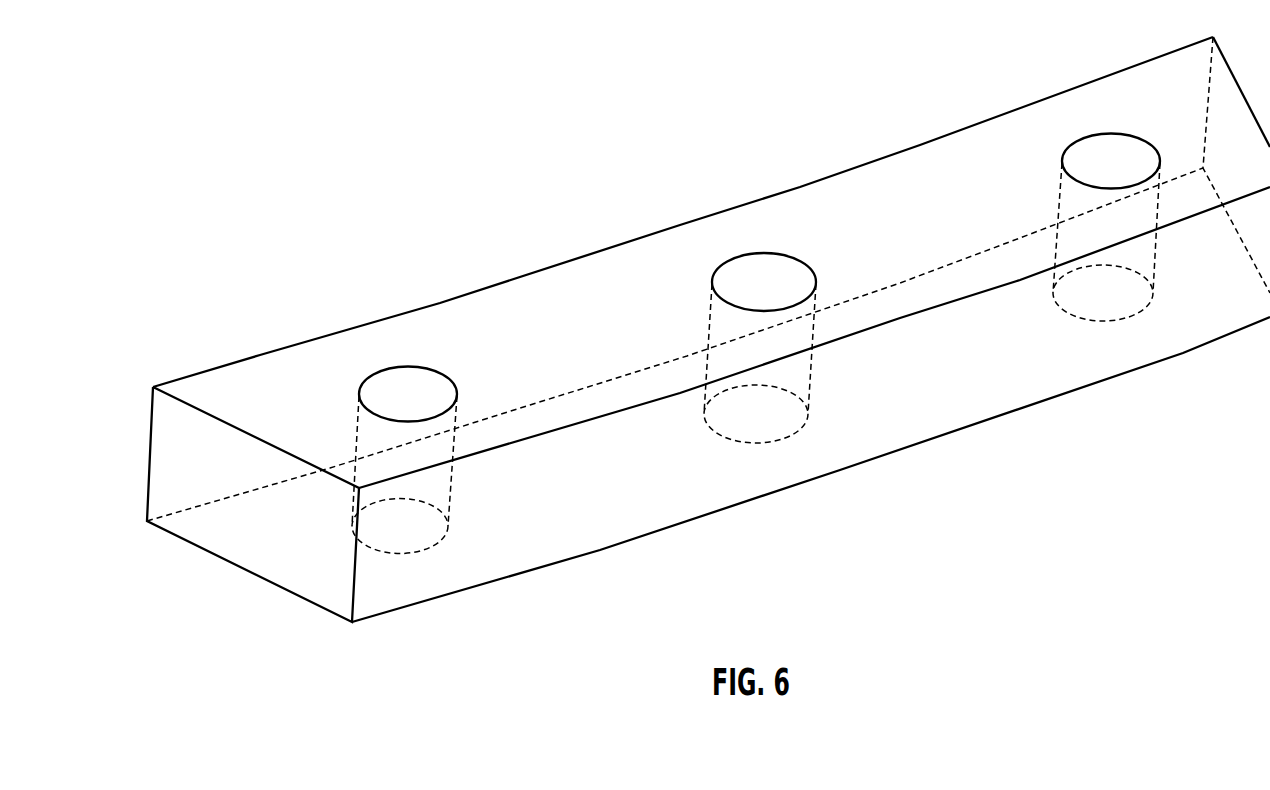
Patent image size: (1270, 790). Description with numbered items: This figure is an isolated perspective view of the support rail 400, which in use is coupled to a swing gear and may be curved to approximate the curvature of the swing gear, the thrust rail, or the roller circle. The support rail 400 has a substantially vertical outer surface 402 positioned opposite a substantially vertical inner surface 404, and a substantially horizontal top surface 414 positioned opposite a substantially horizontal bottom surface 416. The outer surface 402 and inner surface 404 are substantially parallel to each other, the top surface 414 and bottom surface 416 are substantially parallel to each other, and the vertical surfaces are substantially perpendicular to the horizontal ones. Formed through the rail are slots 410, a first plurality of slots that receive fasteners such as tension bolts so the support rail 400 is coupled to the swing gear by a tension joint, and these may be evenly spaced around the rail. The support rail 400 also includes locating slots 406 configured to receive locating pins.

The support rail 400 is at (318, 155).
The outer surface 402 is at (655, 517).
The inner surface 404 is at (492, 317).
The locating slots 406 is at (415, 390).
The slots 410 is at (758, 277).
The top surface 414 is at (892, 202).
The bottom surface 416 is at (522, 574).